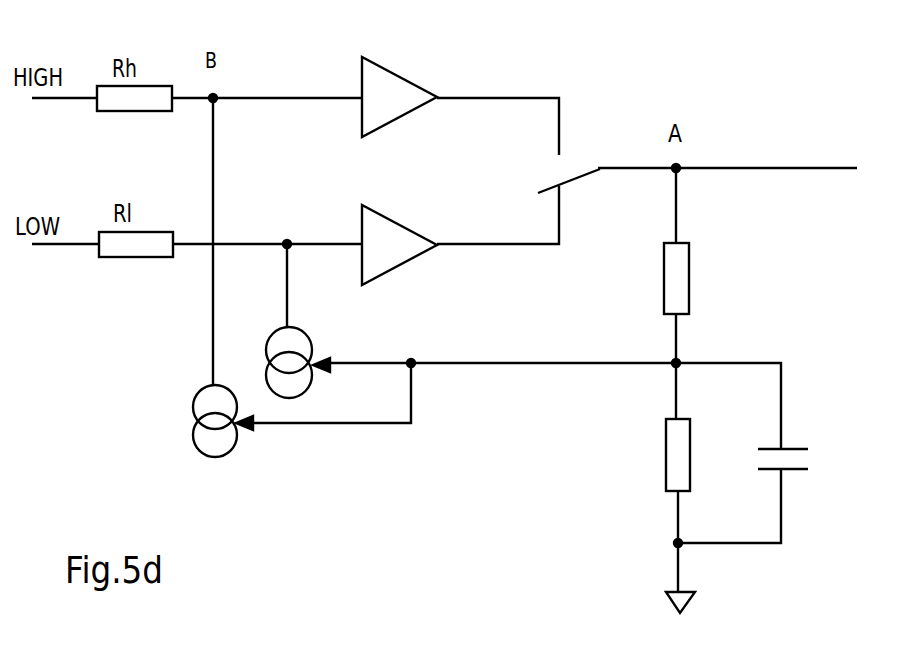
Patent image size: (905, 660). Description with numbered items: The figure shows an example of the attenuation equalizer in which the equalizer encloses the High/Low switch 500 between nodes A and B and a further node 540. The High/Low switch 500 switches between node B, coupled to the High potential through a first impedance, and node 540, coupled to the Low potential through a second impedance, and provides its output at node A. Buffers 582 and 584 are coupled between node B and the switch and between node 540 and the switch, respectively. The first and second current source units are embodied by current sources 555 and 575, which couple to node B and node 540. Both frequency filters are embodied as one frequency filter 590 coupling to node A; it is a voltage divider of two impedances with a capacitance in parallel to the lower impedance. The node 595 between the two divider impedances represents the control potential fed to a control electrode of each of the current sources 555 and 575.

The High/Low switch 500 is at (560, 185).
The node 540 is at (287, 264).
The current source 555 is at (197, 405).
The current source 575 is at (312, 343).
The buffer 582 is at (402, 78).
The buffer 584 is at (402, 220).
The frequency filter 590 is at (738, 329).
The node 595 is at (458, 378).